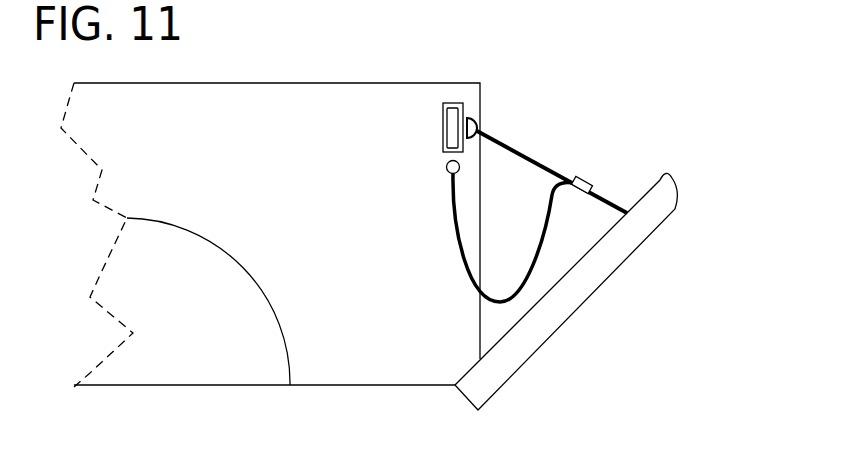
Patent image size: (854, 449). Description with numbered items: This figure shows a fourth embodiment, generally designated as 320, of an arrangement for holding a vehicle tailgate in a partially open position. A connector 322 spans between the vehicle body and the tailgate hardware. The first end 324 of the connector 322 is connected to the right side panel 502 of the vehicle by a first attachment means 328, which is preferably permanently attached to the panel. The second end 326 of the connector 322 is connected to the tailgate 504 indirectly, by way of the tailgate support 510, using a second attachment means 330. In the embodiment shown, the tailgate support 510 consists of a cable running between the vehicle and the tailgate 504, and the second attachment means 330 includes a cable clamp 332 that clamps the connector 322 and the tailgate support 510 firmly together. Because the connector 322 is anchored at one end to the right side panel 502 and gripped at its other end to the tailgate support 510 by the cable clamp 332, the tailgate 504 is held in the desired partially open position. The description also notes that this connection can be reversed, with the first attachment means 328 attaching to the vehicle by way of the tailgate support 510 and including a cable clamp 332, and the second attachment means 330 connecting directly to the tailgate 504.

The right side panel 502 is at (245, 83).
The tailgate 504 is at (655, 225).
The tailgate support 510 is at (619, 198).
The fourth embodiment 320 is at (618, 96).
The connector 322 is at (512, 147).
The first end 324 is at (477, 128).
The second end 326 is at (568, 178).
The first attachment means 328 is at (497, 117).
The second attachment means 330 is at (588, 218).
The cable clamp 332 is at (588, 180).